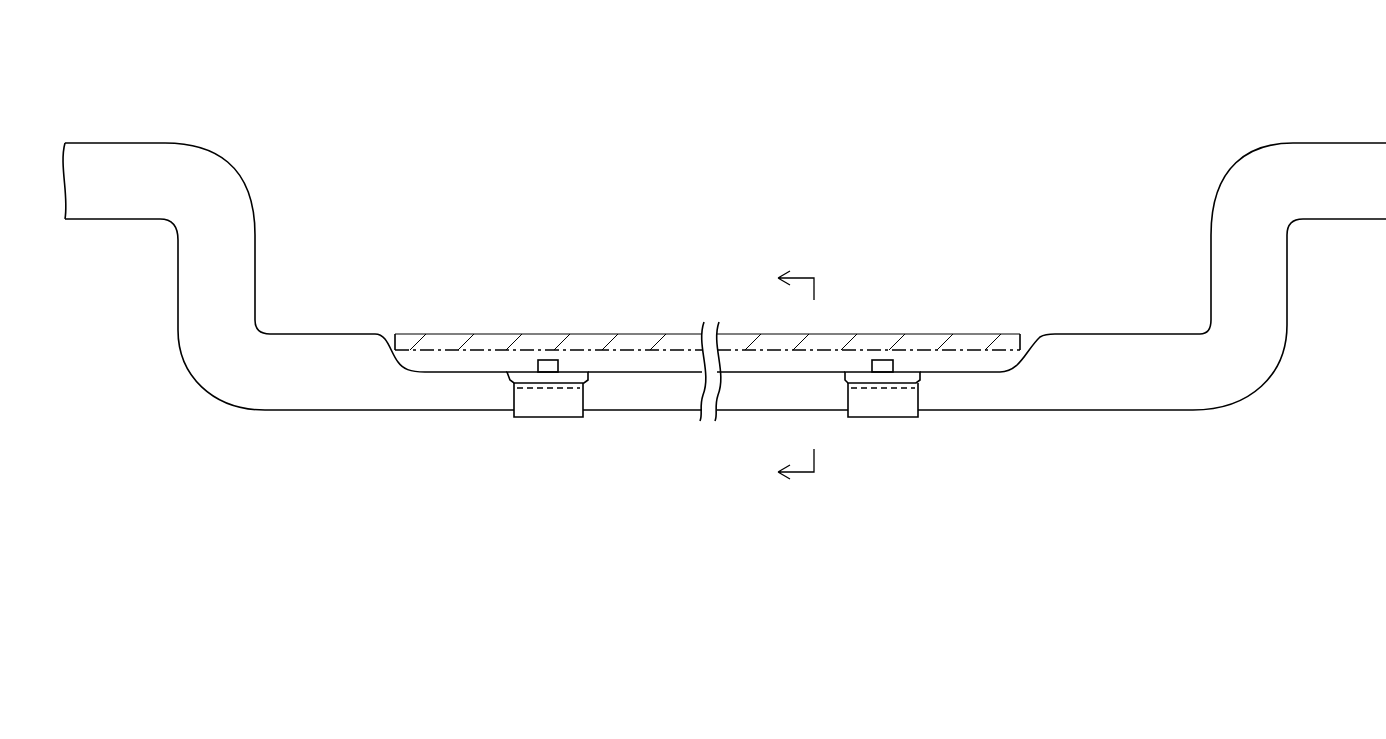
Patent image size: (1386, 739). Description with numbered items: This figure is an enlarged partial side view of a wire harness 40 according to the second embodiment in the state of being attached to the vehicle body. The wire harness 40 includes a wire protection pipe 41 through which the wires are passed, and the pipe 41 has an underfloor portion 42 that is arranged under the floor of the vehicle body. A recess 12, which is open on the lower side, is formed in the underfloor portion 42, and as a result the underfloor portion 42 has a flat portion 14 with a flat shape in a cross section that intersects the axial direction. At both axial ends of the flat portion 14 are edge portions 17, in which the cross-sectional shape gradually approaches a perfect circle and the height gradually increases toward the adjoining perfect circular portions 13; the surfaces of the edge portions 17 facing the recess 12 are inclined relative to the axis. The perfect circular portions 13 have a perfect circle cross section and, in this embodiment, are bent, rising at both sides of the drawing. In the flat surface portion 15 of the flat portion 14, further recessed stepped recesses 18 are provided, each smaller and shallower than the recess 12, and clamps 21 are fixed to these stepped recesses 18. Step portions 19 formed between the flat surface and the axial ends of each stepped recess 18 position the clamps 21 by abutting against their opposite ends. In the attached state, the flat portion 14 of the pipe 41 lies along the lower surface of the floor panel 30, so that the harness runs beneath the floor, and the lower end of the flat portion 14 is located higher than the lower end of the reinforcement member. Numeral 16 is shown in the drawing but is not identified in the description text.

The wire harness 40 is at (566, 136).
The pipe 41 is at (311, 392).
The underfloor portion 42 is at (416, 402).
The edge portions 17 is at (409, 347).
The recess 12 is at (603, 372).
The flat portion 14 is at (671, 402).
The flat surface portion 15 is at (952, 372).
The bottom wall right 16 is at (1020, 395).
The perfect circular portions 13 is at (1240, 359).
The floor panel 30 is at (880, 333).
The clamps 21 is at (545, 403).
The step portions 19 is at (572, 375).
The stepped recesses 18 is at (885, 383).